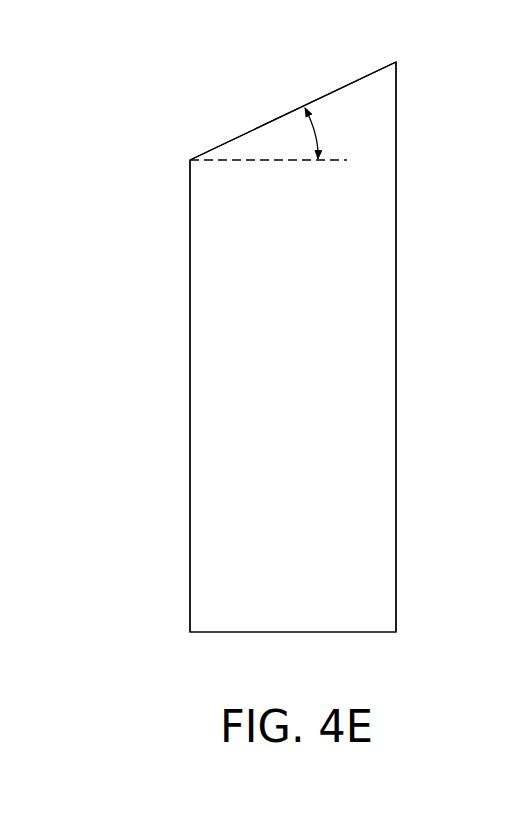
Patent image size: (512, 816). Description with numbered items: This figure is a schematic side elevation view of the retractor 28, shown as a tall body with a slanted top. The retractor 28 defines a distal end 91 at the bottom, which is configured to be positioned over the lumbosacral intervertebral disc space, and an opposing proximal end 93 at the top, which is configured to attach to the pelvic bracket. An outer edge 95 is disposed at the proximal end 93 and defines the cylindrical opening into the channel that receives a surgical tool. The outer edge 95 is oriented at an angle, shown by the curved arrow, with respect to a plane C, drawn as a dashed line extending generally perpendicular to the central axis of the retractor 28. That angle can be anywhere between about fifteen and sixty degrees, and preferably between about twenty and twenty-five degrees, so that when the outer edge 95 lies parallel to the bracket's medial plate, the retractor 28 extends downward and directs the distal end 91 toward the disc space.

The retractor 28 is at (180, 280).
The outer edge 95 is at (270, 118).
The proximal end 93 is at (396, 112).
The distal end 91 is at (189, 587).
The plane C is at (281, 160).